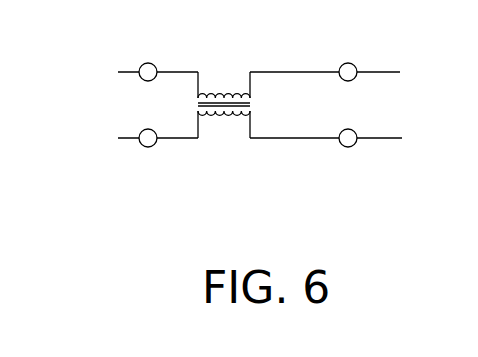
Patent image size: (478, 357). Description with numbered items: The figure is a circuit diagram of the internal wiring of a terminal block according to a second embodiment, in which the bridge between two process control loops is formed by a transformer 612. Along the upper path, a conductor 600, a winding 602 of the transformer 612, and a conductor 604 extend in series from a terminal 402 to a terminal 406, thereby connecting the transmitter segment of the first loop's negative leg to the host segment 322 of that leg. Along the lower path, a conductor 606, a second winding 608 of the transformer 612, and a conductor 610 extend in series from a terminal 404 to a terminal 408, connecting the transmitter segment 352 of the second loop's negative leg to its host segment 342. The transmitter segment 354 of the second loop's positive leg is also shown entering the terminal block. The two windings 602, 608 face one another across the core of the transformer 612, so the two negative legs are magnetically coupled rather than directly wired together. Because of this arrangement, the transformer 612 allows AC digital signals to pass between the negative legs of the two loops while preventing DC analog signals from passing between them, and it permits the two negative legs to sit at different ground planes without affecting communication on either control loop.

The host segment 322 is at (400, 73).
The host segment 342 is at (402, 140).
The transmitter segment 352 is at (118, 140).
The transmitter segment 354 is at (118, 73).
The terminal 402 is at (142, 65).
The terminal 404 is at (154, 146).
The terminal 406 is at (352, 64).
The terminal 408 is at (354, 146).
The conductor 600 is at (167, 71).
The winding 602 is at (235, 96).
The conductor 604 is at (300, 71).
The conductor 606 is at (198, 140).
The second winding 608 is at (222, 114).
The conductor 610 is at (312, 140).
The transformer 612 is at (256, 103).